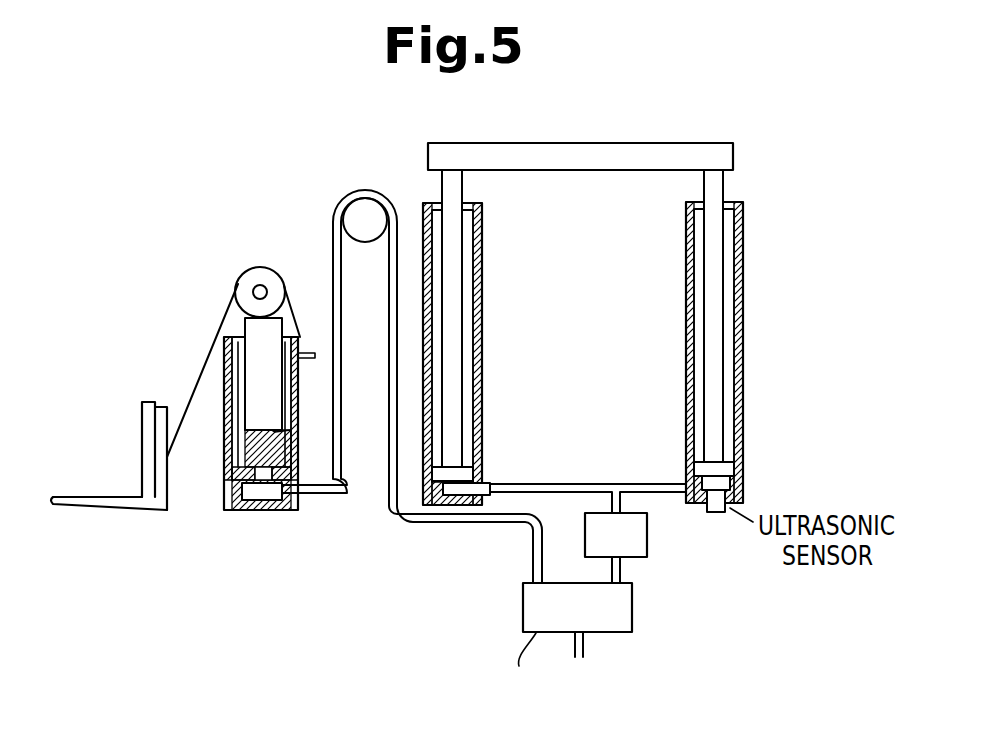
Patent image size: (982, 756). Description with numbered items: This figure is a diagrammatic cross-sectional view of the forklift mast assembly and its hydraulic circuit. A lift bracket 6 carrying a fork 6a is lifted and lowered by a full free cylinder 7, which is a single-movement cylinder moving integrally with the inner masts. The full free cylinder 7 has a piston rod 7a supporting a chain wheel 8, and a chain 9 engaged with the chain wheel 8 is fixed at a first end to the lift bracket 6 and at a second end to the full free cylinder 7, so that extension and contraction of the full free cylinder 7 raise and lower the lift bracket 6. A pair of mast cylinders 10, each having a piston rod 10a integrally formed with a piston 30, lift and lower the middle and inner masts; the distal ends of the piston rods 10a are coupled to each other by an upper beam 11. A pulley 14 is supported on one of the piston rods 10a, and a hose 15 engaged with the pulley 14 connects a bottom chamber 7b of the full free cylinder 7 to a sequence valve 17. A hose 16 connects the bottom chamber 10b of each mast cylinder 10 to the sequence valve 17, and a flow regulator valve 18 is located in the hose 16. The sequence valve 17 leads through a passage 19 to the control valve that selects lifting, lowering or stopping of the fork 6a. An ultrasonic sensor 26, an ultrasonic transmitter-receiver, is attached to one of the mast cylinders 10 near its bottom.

The lift bracket 6 is at (172, 497).
The fork 6a is at (108, 497).
The full free cylinder 7 is at (222, 490).
The piston rod 7a is at (253, 400).
The bottom chamber 7b is at (262, 503).
The chain wheel 8 is at (265, 268).
The chain 9 is at (202, 372).
The mast cylinder 10 is at (482, 331).
The piston rod 10a is at (457, 268).
The bottom chamber 10b is at (446, 504).
The upper beam 11 is at (585, 143).
The pulley 14 is at (365, 242).
The hose 15 is at (340, 496).
The hose 16 is at (622, 574).
The sequence valve 17 is at (523, 608).
The flow regulator valve 18 is at (647, 537).
The passage 19 is at (583, 645).
The ultrasonic sensor 26 is at (717, 513).
The piston 30 is at (470, 470).